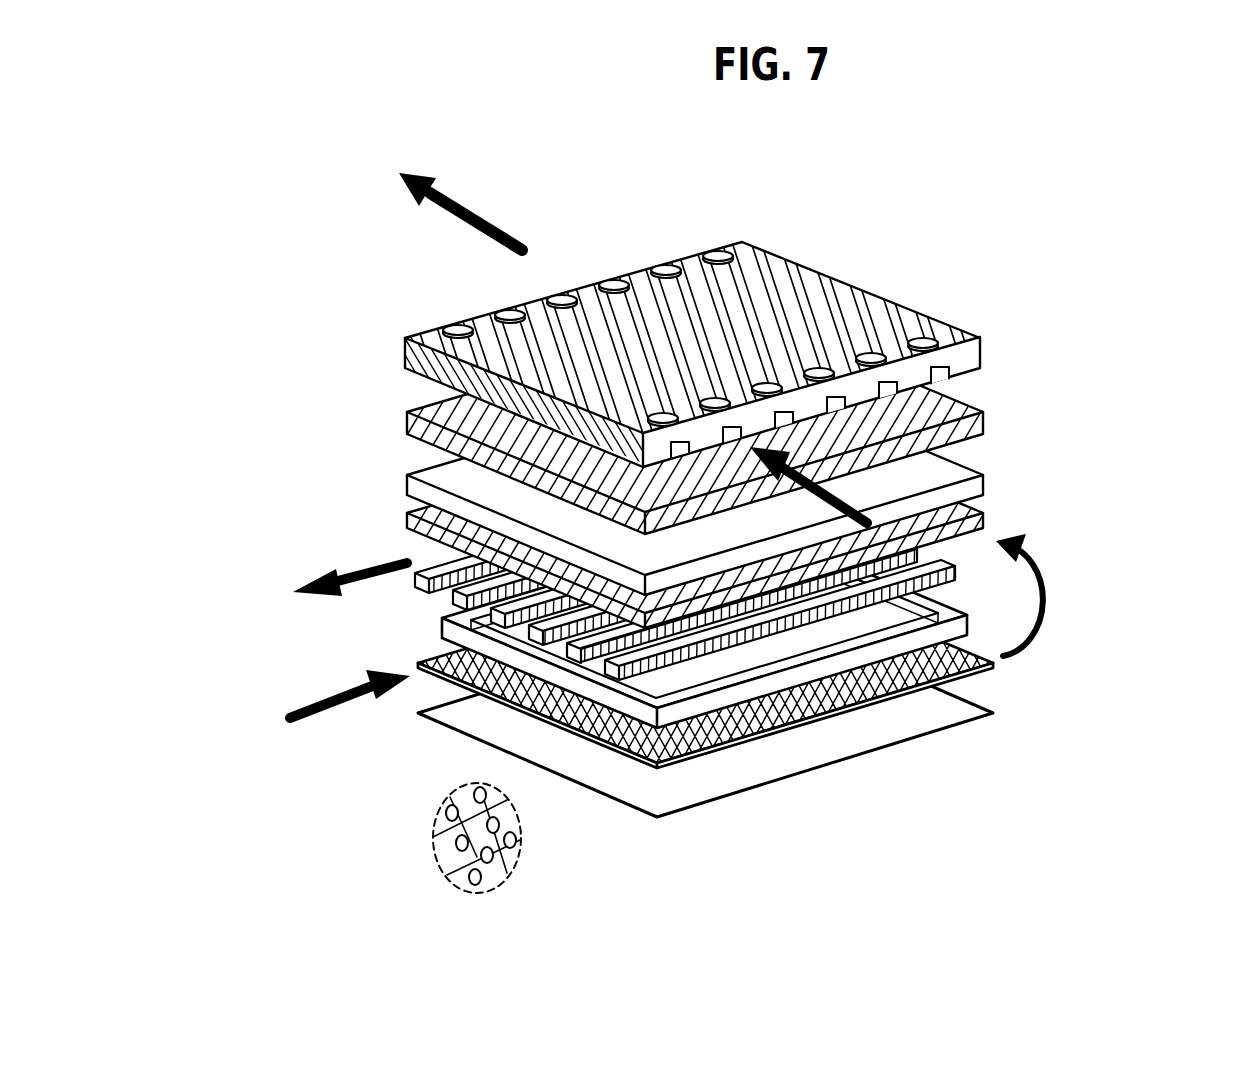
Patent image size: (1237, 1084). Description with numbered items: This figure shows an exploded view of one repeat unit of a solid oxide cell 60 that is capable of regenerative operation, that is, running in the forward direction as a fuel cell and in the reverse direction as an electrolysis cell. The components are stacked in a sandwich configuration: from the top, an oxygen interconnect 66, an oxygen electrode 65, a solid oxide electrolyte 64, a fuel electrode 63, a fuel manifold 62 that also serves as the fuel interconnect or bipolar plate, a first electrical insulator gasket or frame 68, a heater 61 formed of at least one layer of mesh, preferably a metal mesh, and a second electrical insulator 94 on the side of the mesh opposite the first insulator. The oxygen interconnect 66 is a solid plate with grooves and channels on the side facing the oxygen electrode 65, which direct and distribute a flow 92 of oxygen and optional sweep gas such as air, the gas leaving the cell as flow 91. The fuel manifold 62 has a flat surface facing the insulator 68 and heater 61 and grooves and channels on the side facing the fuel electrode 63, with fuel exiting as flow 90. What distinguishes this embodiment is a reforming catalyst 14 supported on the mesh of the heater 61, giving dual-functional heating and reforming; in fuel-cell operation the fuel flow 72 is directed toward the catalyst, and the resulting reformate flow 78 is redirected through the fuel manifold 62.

The reforming catalyst 14 is at (478, 880).
The solid oxide cell 60 is at (864, 203).
The heater 61 is at (783, 728).
The fuel manifold 62 is at (423, 592).
The fuel electrode 63 is at (413, 528).
The solid oxide electrolyte 64 is at (998, 484).
The oxygen electrode 65 is at (992, 420).
The oxygen interconnect 66 is at (838, 265).
The first electrical insulator gasket or frame 68 is at (887, 660).
The fuel flow 72 is at (330, 742).
The reformate flow 78 is at (1058, 622).
The exiting fuel flow 90 is at (325, 591).
The exiting oxygen flow 91 is at (392, 167).
The oxygen flow 92 is at (795, 475).
The second electrical insulator 94 is at (458, 732).